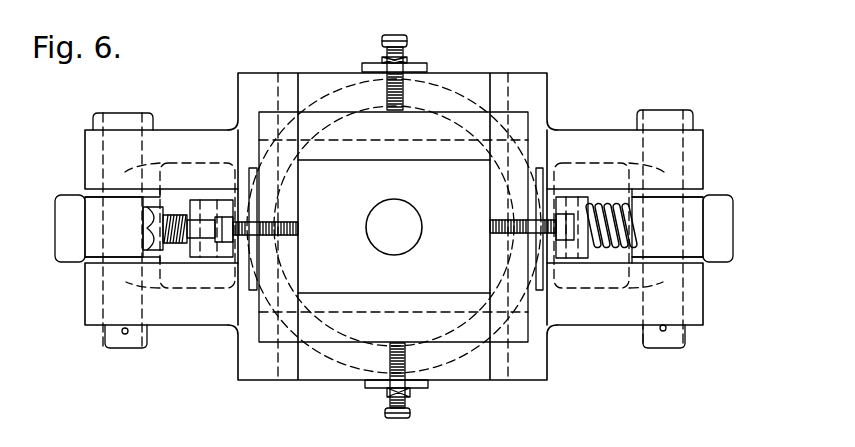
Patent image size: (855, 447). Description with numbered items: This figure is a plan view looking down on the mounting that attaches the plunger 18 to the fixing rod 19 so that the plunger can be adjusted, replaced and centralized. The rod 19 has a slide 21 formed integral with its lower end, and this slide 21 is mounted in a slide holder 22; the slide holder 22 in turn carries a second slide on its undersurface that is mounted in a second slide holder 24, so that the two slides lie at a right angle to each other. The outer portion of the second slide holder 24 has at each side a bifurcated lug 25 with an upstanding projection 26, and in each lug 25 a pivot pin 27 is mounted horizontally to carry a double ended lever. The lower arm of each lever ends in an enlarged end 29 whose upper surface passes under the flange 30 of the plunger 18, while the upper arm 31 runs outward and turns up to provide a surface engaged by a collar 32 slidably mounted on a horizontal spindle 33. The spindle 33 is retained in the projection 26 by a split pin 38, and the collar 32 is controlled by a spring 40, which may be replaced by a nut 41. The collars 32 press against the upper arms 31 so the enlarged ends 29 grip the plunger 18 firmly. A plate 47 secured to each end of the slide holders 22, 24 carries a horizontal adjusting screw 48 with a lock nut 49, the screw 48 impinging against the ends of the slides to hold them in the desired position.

The plunger 18 is at (340, 123).
The fixing rod 19 is at (394, 227).
The slide 21 is at (394, 226).
The slide holder 22 is at (530, 111).
The second slide holder 24 is at (287, 72).
The bifurcated lug 25 is at (207, 130).
The upstanding projection 26 is at (296, 231).
The pivot pin 27 is at (687, 112).
The enlarged end 29 is at (289, 290).
The flange 30 is at (457, 95).
The upper arm 31 is at (58, 224).
The collar 32 is at (394, 226).
The horizontal spindle 33 is at (181, 245).
The split pin 38 is at (221, 205).
The spring 40 is at (613, 248).
The nut 41 is at (152, 207).
The plate 47 is at (367, 63).
The adjusting screw 48 is at (389, 98).
The lock nut 49 is at (409, 59).